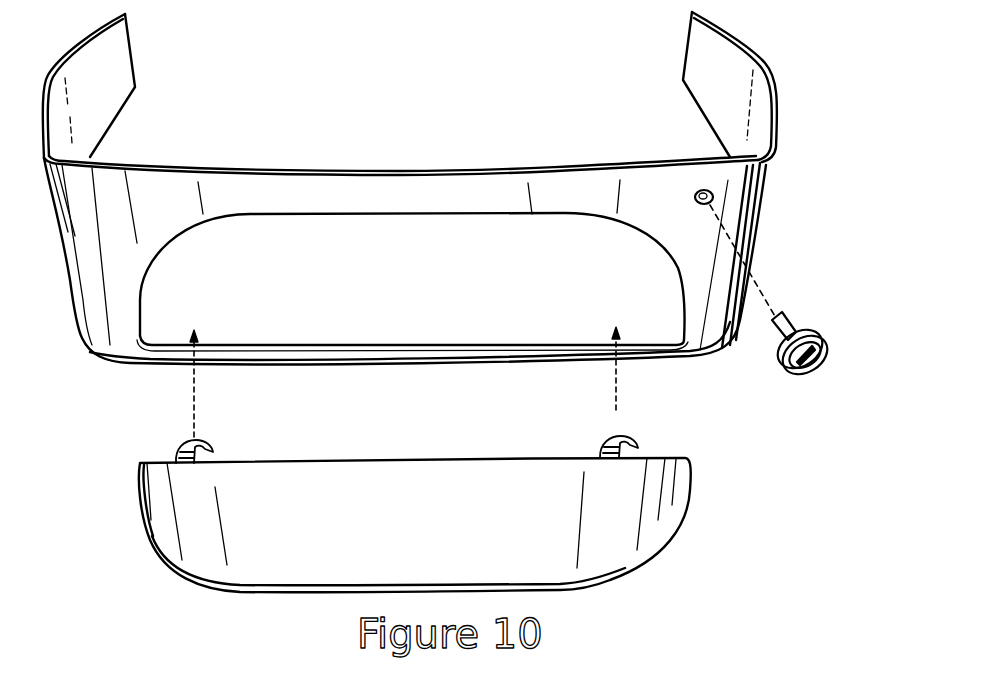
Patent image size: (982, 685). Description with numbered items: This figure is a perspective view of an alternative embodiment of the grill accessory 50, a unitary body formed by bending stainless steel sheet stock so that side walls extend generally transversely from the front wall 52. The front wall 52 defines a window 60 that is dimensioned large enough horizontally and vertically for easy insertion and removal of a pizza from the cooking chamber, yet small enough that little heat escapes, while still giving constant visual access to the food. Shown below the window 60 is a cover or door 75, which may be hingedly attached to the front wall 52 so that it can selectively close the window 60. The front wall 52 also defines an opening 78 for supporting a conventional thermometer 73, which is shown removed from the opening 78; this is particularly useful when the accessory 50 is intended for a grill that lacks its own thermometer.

The accessory 50 is at (728, 80).
The front wall 52 is at (163, 354).
The window 60 is at (433, 299).
The thermometer 73 is at (800, 376).
The door 75 is at (434, 532).
The opening 78 is at (700, 186).